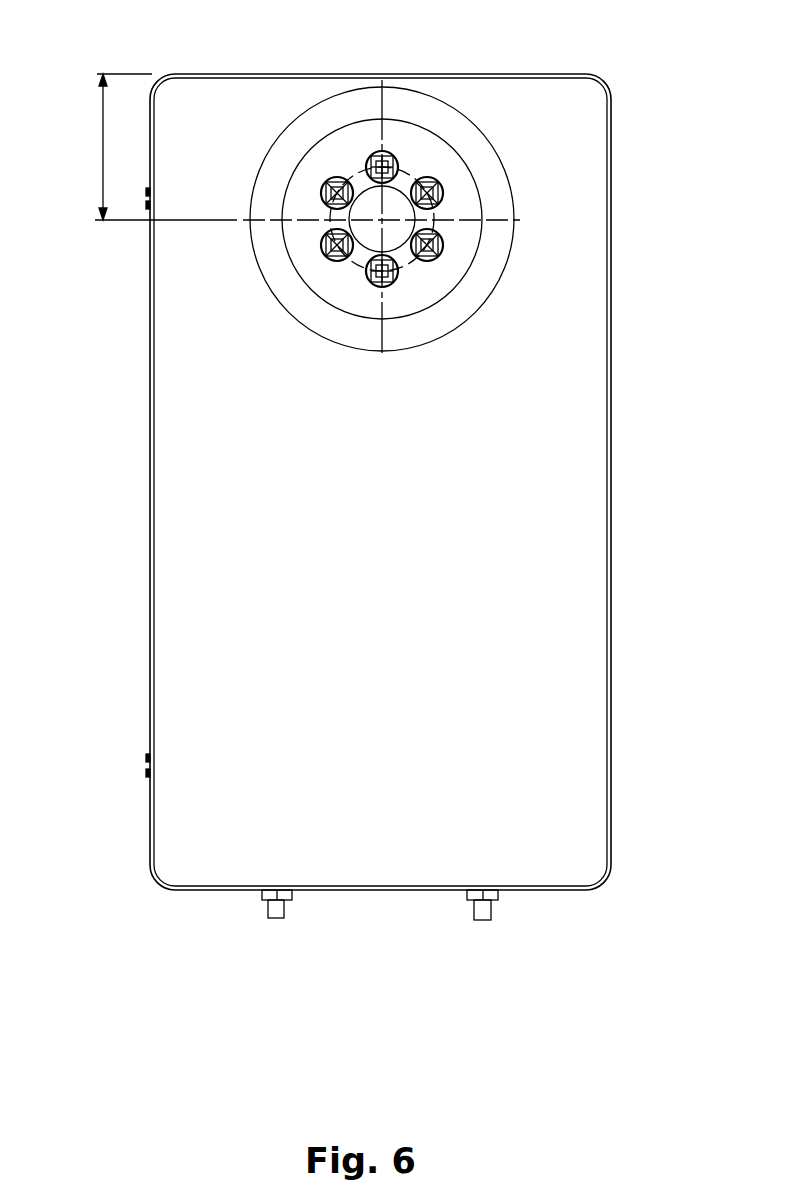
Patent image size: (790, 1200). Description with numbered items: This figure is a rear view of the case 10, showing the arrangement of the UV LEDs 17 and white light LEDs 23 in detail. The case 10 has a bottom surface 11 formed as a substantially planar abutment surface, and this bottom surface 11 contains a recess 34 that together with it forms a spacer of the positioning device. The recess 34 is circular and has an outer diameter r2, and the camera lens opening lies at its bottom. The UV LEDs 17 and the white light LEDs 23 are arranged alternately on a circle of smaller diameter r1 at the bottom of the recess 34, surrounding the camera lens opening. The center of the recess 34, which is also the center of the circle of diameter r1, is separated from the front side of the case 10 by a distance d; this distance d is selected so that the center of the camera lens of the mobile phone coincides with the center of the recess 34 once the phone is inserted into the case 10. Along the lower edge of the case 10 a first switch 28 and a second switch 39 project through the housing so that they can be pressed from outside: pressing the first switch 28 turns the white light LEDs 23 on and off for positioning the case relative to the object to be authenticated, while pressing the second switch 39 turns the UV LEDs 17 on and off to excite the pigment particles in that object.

The case 10 is at (418, 482).
The bottom surface 11 is at (218, 869).
The UV LEDs 17 is at (391, 192).
The white light LEDs 23 is at (390, 244).
The first switch 28 is at (276, 918).
The second switch 39 is at (483, 912).
The recess 34 is at (282, 285).
The diameter of the LED circle r1 is at (452, 206).
The outer diameter of the recess r2 is at (517, 277).
The distance d is at (147, 147).